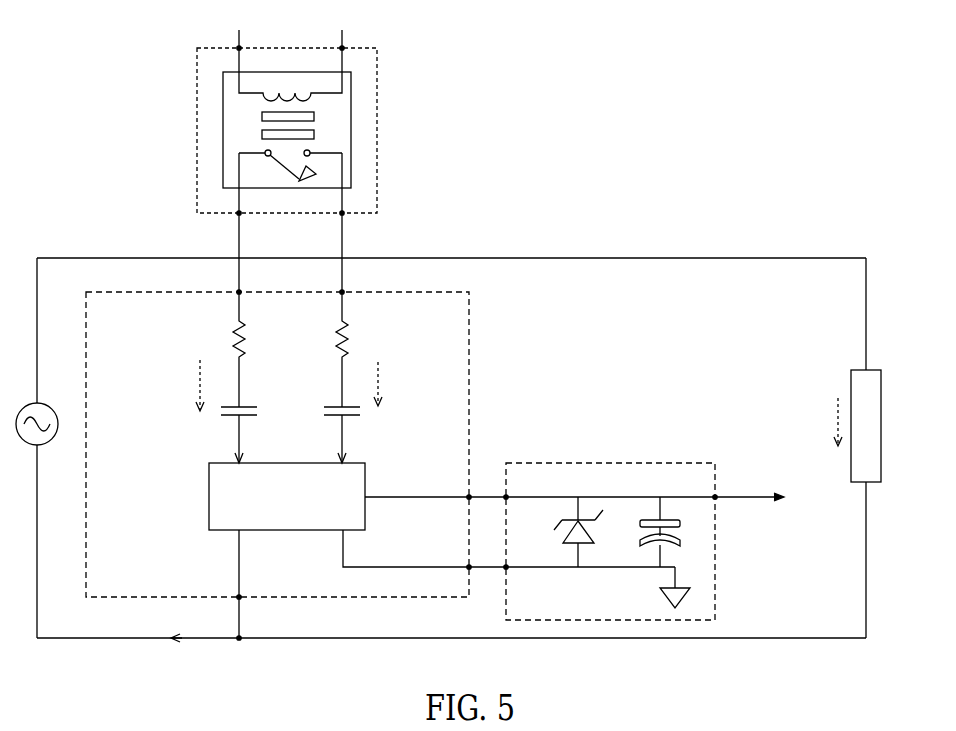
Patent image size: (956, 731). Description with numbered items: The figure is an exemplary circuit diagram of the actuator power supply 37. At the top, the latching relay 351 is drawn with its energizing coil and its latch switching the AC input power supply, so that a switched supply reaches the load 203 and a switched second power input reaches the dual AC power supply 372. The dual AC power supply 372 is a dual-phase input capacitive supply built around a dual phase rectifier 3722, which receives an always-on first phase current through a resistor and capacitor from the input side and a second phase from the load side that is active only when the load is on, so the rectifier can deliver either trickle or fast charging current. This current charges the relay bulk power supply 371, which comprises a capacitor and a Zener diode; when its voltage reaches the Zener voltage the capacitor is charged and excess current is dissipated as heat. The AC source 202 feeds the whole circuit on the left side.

The actuator power supply 37 is at (767, 178).
The AC power source 202 is at (20, 417).
The load 203 is at (882, 393).
The latching relay 351 is at (354, 47).
The dual AC power supply 372 is at (317, 449).
The dual phase rectifier 3722 is at (209, 497).
The relay bulk power supply 371 is at (590, 463).